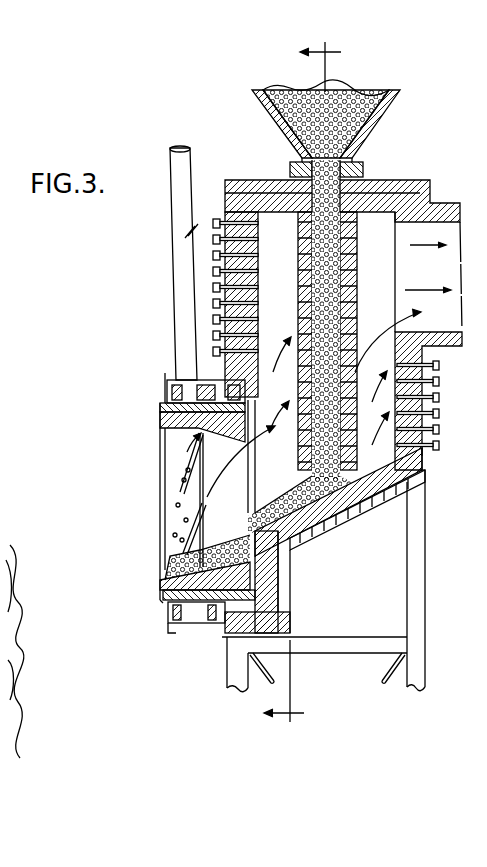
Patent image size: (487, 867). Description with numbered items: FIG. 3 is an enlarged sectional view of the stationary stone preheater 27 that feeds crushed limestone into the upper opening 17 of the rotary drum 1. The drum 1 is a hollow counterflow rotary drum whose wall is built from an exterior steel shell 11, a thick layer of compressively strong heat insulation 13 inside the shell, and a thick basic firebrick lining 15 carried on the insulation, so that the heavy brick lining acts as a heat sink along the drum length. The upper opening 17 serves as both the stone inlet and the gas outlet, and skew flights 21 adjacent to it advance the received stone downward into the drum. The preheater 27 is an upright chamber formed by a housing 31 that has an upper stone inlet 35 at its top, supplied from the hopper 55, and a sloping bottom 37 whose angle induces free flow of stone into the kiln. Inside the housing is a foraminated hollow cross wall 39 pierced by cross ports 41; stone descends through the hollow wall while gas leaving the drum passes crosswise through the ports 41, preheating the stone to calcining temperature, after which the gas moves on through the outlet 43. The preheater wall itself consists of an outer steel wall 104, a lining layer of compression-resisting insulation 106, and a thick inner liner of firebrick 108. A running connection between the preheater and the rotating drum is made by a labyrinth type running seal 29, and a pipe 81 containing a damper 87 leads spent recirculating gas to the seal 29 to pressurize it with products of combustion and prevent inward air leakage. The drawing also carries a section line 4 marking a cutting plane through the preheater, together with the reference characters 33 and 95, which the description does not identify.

The rotary drum 1 is at (162, 604).
The section line 4- 4 is at (308, 387).
The exterior steel shell 11 is at (164, 401).
The heat insulation 13 is at (160, 410).
The basic firebrick lining 15 is at (160, 426).
The upper opening 17 is at (234, 479).
The skew flights 21 is at (195, 442).
The stationary stone preheater 27 is at (345, 411).
The labyrinth type running seal 29 is at (199, 628).
The housing 31 is at (252, 180).
The inclined slab 33 is at (365, 500).
The upper stone inlet 35 is at (306, 156).
The sloping bottom 37 is at (300, 541).
The foraminated hollow cross wall 39 is at (298, 318).
The cross ports 41 is at (300, 268).
The outlet 43 is at (436, 278).
The hopper 55 is at (388, 103).
The pipe 81 is at (178, 218).
The damper 87 is at (190, 232).
The bolts 95 is at (214, 272).
The outer steel wall 104 is at (422, 456).
The insulation lining layer 106 is at (418, 477).
The firebrick liner 108 is at (396, 483).